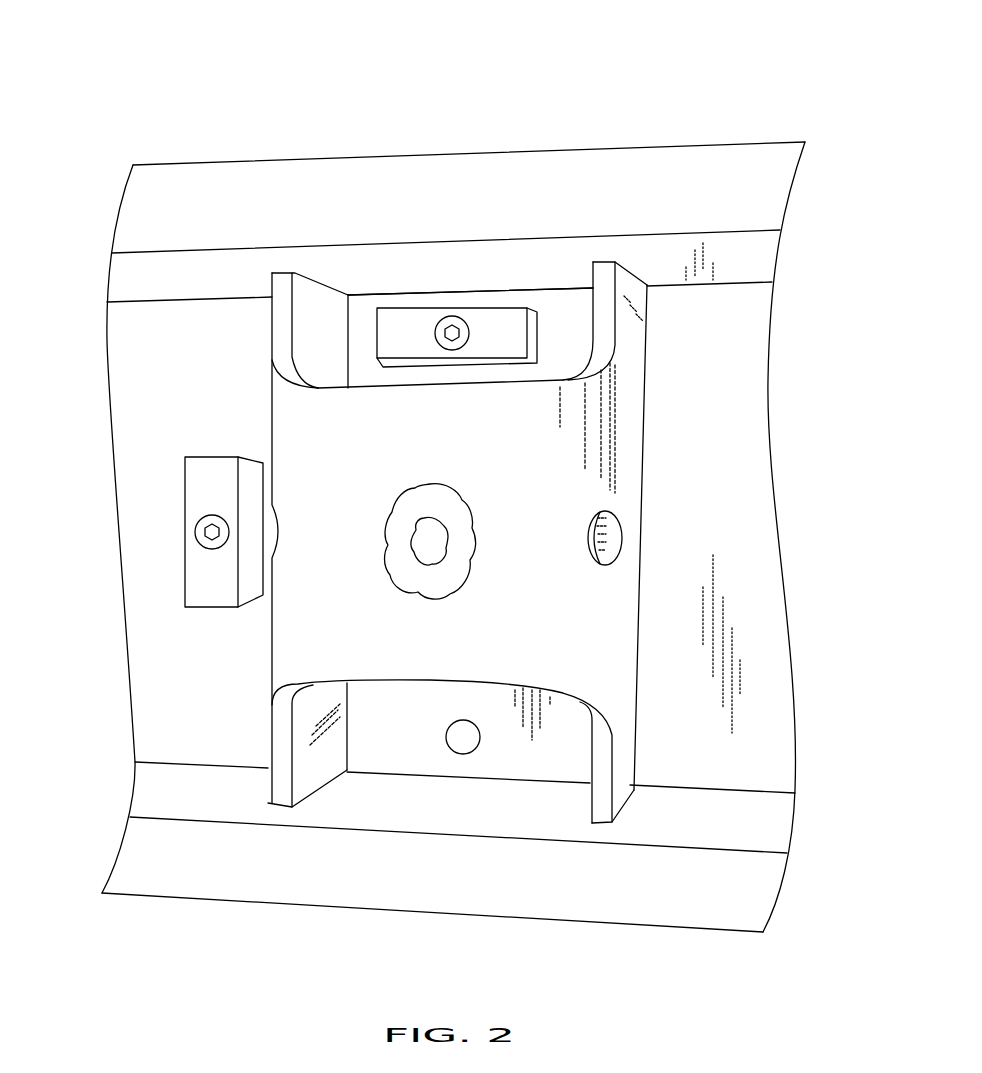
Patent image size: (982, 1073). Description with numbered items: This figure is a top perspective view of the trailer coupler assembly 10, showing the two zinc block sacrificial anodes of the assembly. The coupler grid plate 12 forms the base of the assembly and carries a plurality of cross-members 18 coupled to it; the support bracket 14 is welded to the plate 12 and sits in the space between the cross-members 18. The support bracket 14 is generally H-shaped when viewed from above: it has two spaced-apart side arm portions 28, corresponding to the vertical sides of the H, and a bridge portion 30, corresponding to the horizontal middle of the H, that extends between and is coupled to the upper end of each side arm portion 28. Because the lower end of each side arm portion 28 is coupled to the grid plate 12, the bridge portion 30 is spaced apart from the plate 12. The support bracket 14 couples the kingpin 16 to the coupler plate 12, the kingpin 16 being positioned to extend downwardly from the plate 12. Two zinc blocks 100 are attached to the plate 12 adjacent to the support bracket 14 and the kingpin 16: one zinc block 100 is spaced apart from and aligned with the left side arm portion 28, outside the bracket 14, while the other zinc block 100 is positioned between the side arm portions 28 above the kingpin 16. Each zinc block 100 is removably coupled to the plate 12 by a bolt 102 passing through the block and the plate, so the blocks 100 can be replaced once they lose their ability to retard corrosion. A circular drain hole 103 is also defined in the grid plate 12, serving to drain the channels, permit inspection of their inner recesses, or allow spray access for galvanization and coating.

The trailer coupler assembly 10 is at (148, 82).
The coupler grid plate 12 is at (773, 667).
The support bracket 14 is at (565, 433).
The kingpin 16 is at (435, 545).
The cross-members 18 is at (457, 180).
The side arm portions 28 is at (818, 790).
The bridge portion 30 is at (459, 538).
The zinc block 100 is at (506, 322).
The bolt 102 is at (447, 320).
The drain holes 103 is at (446, 740).